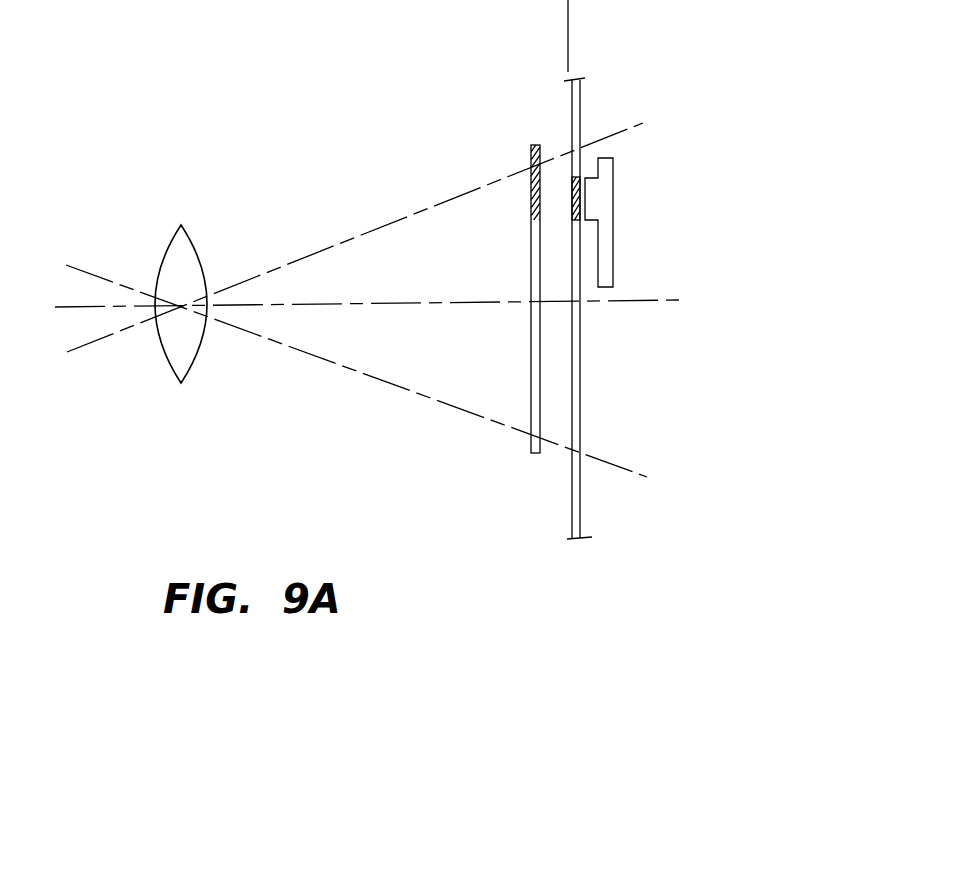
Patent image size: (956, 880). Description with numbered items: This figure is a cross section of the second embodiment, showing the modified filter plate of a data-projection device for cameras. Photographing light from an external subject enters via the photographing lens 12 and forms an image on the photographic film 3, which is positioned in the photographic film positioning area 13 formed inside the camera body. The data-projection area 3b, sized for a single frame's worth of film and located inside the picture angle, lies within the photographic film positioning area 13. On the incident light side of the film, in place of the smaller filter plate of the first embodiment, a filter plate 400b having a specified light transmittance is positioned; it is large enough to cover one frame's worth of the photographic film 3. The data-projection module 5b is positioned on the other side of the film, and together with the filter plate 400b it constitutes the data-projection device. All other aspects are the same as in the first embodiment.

The photographing lens 12 is at (195, 248).
The photographic film positioning area 13 is at (568, 15).
The photographic film 3 is at (580, 107).
The data-projection area 3b is at (568, 182).
The filter plate 400b is at (537, 395).
The data-projection module 5b is at (608, 282).